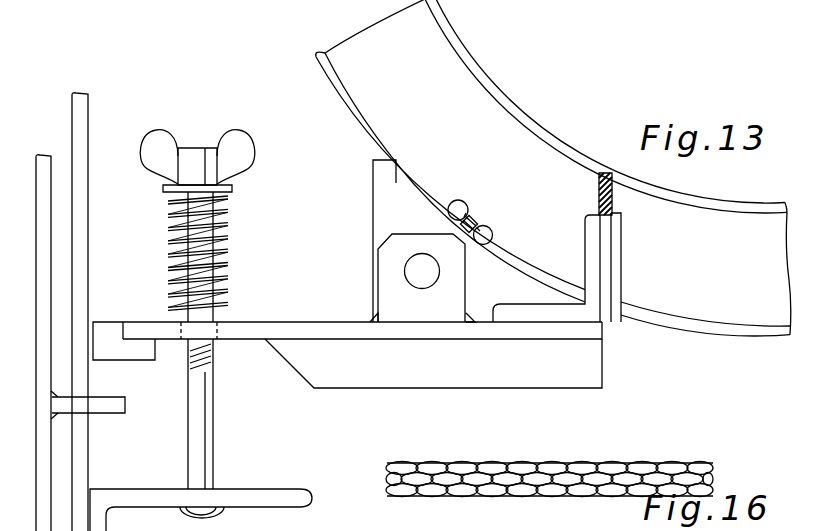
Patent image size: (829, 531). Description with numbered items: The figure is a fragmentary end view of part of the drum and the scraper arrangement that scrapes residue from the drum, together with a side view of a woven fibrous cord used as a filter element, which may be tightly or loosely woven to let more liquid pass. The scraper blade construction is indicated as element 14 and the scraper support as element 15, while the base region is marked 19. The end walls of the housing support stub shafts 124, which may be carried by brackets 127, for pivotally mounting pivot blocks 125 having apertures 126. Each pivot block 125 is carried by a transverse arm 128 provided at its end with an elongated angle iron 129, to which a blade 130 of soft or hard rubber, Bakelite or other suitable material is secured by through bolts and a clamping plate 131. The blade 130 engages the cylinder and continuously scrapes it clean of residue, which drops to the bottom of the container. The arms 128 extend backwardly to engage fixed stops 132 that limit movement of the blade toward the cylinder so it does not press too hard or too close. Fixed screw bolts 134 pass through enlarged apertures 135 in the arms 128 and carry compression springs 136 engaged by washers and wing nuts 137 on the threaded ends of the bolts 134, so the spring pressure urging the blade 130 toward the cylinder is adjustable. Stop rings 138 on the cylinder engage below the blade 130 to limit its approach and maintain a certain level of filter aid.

The scraper blade element 14 is at (642, 235).
The scraper support element 15 is at (282, 303).
The base 19 is at (630, 377).
The stub shafts 124 is at (418, 283).
The pivot blocks 125 is at (383, 268).
The apertures 126 is at (407, 263).
The brackets 127 is at (379, 191).
The transverse arm 128 is at (328, 323).
The elongated angle iron 129 is at (577, 313).
The blade 130 is at (608, 262).
The clamping plate 131 is at (620, 283).
The fixed stops 132 is at (112, 330).
The screw bolts 134 is at (208, 432).
The enlarged apertures 135 is at (216, 333).
The compression springs 136 is at (229, 255).
The wing nuts 137 is at (246, 142).
The stop rings 138 is at (575, 148).